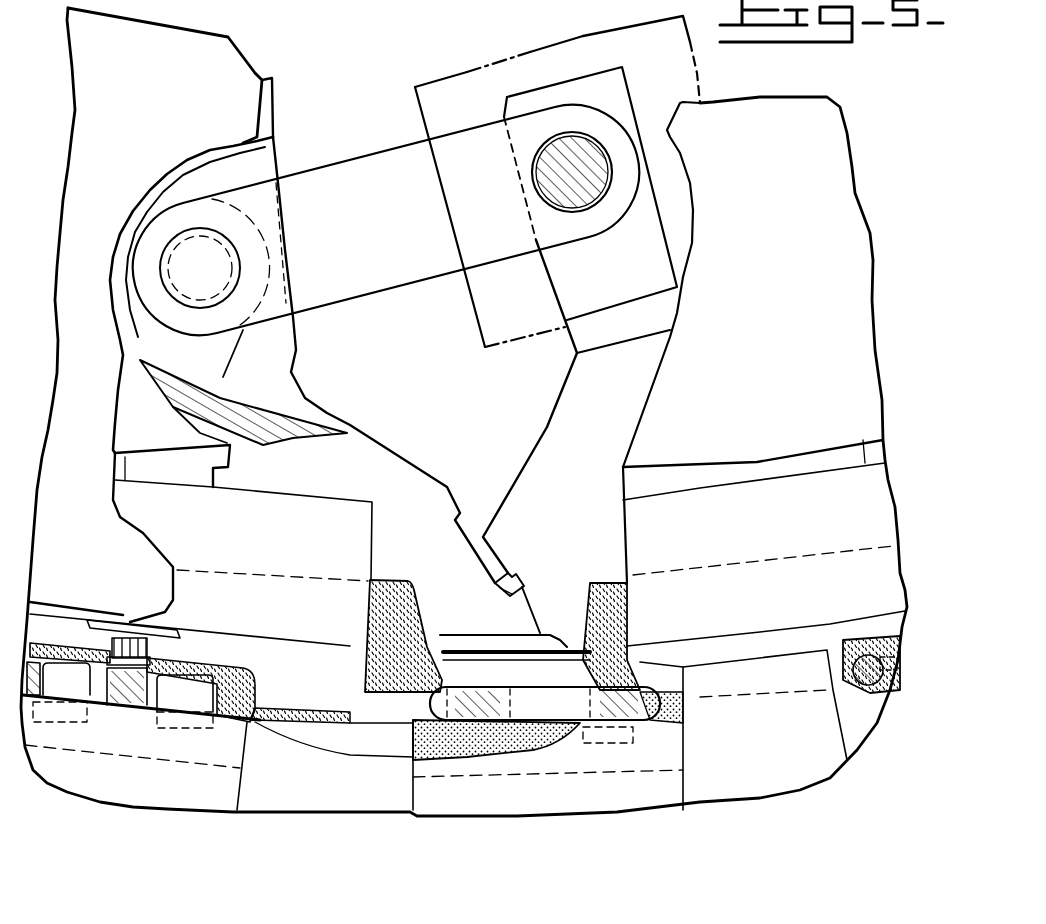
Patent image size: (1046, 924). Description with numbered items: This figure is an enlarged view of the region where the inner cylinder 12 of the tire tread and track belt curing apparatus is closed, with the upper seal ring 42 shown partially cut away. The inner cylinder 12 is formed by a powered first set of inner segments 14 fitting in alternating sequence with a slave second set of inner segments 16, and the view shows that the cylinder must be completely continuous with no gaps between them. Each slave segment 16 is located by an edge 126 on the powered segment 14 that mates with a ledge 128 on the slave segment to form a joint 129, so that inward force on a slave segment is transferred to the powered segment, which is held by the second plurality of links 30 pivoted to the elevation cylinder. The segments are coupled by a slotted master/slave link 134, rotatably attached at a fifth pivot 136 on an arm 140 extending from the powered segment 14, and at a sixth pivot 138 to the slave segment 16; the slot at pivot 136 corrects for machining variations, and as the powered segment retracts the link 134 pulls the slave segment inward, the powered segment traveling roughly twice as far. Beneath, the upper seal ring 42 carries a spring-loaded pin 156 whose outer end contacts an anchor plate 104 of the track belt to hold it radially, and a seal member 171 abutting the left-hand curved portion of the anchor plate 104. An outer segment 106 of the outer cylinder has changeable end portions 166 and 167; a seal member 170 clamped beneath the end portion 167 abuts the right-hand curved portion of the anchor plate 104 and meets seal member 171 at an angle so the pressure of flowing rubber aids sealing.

The second plurality of links 30 is at (557, 50).
The arm 140 is at (617, 87).
The slotted master/slave link 134 is at (373, 238).
The sixth plurality of pivots 138 is at (225, 282).
The fifth plurality of pivots 136 is at (573, 187).
The first set of inner segments 14 is at (556, 436).
The second set of inner segments 16 is at (392, 473).
The upper seal ring 42 is at (275, 543).
The seal member 171 is at (613, 583).
The edge 126 is at (520, 590).
The ledge 128 is at (540, 622).
The inner cylinder 12 is at (493, 637).
The joint 129 is at (572, 656).
The anchor plate 104 is at (570, 718).
The pin 156 is at (125, 638).
The seal member 170 is at (240, 713).
The end portion 167 is at (167, 792).
The outer segment 106 is at (617, 822).
The end portion 166 is at (773, 693).